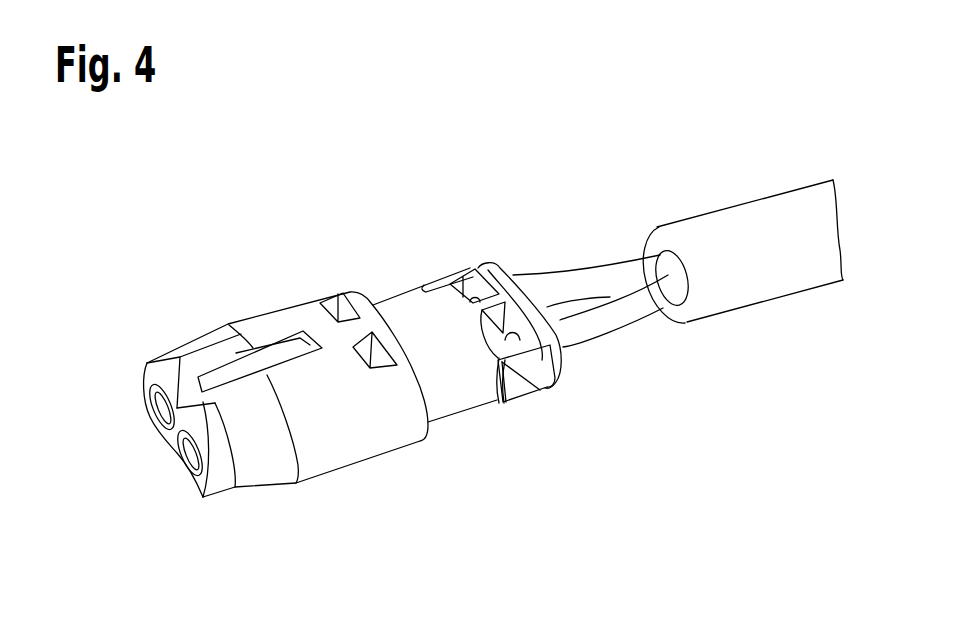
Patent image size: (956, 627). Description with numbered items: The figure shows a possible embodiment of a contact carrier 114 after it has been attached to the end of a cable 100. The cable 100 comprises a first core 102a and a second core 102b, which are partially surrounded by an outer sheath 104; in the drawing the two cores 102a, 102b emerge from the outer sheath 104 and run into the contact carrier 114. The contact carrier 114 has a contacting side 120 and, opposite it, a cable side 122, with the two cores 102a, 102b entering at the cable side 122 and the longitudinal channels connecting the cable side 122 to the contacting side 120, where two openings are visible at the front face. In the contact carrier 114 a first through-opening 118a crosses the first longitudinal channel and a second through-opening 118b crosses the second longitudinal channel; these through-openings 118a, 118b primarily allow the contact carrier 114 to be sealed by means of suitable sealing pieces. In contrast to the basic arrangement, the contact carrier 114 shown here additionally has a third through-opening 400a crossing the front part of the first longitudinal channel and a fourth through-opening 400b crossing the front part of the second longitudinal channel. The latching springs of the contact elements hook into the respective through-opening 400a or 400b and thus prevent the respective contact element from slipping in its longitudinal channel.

The cable 100 is at (508, 208).
The first core 102a is at (613, 265).
The second core 102b is at (623, 325).
The outer sheath 104 is at (760, 195).
The contact carrier 114 is at (203, 340).
The first through-opening 118a is at (490, 273).
The second through-opening 118b is at (527, 380).
The contacting side 120 is at (147, 380).
The cable side 122 is at (517, 268).
The third through-opening 400a is at (350, 292).
The fourth through-opening 400b is at (382, 372).